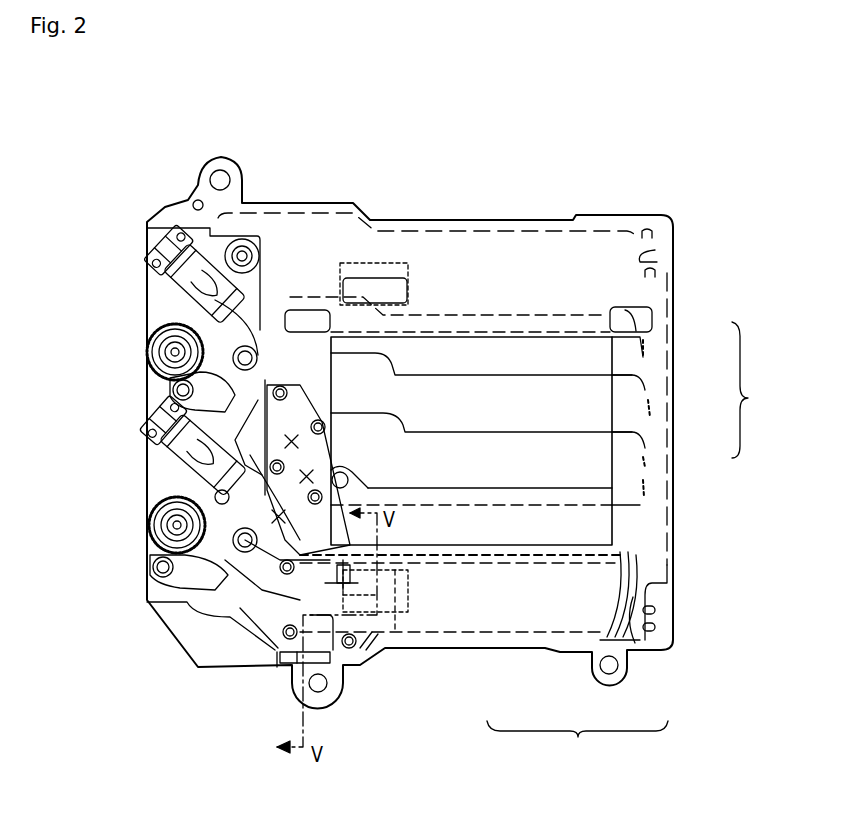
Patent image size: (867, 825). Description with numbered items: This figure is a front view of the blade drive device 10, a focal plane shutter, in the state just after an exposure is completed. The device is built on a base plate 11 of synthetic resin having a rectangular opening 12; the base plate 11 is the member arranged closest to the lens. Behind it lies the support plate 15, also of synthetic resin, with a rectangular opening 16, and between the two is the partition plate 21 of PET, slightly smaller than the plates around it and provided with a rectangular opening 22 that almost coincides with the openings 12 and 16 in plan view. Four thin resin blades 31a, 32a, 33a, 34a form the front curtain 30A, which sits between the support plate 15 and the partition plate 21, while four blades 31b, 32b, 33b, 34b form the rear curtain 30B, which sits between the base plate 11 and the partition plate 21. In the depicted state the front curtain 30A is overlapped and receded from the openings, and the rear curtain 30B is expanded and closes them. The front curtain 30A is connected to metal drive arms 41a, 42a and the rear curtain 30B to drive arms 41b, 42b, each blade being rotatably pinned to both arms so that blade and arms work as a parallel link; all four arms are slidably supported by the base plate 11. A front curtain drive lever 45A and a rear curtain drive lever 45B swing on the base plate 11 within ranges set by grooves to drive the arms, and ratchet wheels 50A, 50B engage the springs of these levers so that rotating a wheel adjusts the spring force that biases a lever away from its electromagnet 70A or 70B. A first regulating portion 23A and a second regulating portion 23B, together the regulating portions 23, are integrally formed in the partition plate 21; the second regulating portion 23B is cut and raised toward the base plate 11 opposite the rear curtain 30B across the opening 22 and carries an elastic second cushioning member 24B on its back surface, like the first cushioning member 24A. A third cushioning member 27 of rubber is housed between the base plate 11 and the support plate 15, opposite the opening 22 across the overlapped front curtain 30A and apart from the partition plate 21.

The blade drive device 10 is at (633, 181).
The base plate 11 is at (673, 617).
The opening 12 is at (468, 346).
The support plate 15 is at (660, 597).
The opening 16 is at (468, 346).
The partition plate 21 is at (668, 567).
The opening 22 is at (528, 345).
The regulating portions 23 is at (385, 300).
The first regulating portion 23A is at (419, 213).
The second regulating portion 23B is at (383, 572).
The first cushioning member 24A is at (378, 262).
The second cushioning member 24B is at (397, 597).
The third cushioning member 27 is at (293, 655).
The front curtain 30A is at (484, 660).
The rear curtain 30B is at (699, 427).
The blade 31a is at (480, 641).
The blade 31b is at (620, 533).
The blade 32a is at (480, 641).
The blade 32b is at (647, 463).
The blade 33a is at (480, 641).
The blade 33b is at (647, 400).
The blade 34a is at (548, 613).
The blade 34b is at (643, 342).
The drive arm 41a is at (257, 623).
The drive arm 41b is at (305, 400).
The drive arm 42a is at (290, 548).
The drive arm 42b is at (300, 410).
The front curtain drive lever 45A is at (160, 566).
The rear curtain drive lever 45B is at (163, 395).
The ratchet wheel 50A is at (148, 521).
The ratchet wheel 50B is at (147, 348).
The electromagnet 70A is at (165, 460).
The electromagnet 70B is at (175, 292).